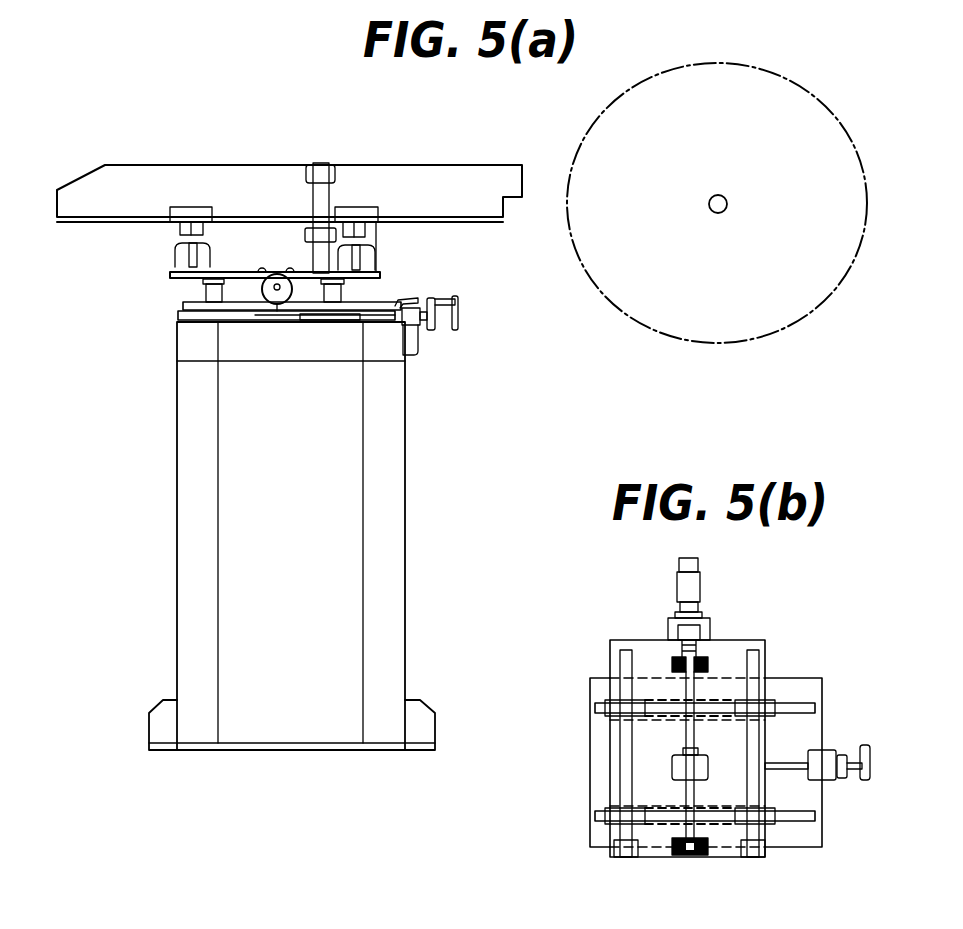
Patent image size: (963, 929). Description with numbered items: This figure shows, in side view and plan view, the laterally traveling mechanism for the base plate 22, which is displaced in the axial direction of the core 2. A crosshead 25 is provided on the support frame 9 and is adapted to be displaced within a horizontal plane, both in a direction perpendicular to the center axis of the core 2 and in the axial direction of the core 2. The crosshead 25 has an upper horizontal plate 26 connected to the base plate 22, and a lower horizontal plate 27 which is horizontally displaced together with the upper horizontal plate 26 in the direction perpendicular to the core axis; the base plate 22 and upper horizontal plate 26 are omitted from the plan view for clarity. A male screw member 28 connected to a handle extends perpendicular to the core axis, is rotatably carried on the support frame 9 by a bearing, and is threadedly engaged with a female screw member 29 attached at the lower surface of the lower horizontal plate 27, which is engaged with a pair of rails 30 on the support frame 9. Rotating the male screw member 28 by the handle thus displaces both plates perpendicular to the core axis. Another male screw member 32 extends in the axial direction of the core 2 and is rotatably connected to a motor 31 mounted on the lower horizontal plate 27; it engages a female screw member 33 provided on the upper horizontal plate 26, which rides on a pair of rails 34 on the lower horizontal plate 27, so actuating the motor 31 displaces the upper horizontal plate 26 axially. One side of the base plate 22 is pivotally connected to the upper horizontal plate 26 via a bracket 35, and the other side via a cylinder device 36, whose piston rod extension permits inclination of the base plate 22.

In FIG. 5A, the core 2 is at (782, 333).
In FIG. 5A, the support frame 9 is at (385, 570).
In FIG. 5B, the support frame 9 is at (800, 688).
In FIG. 5A, the base plate 22 is at (363, 183).
In FIG. 5A, the crosshead 25 is at (383, 283).
In FIG. 5A, the upper horizontal plate 26 is at (243, 274).
In FIG. 5A, the lower horizontal plate 27 is at (247, 320).
In FIG. 5B, the lower horizontal plate 27 is at (648, 752).
In FIG. 5A, the male screw member 28 is at (436, 315).
In FIG. 5B, the male screw member 28 is at (790, 765).
In FIG. 5A, the female screw member 29 is at (347, 323).
In FIG. 5A, the rails 30 is at (183, 305).
In FIG. 5B, the rails 30 is at (592, 710).
In FIG. 5B, the motor 31 is at (693, 583).
In FIG. 5A, the male screw member 32 is at (272, 320).
In FIG. 5B, the male screw member 32 is at (692, 693).
In FIG. 5A, the female screw member 33 is at (288, 273).
In FIG. 5B, the female screw member 33 is at (670, 782).
In FIG. 5A, the rails 34 is at (207, 297).
In FIG. 5B, the rails 34 is at (613, 848).
In FIG. 5A, the bracket 35 is at (186, 258).
In FIG. 5A, the cylinder device 36 is at (315, 233).